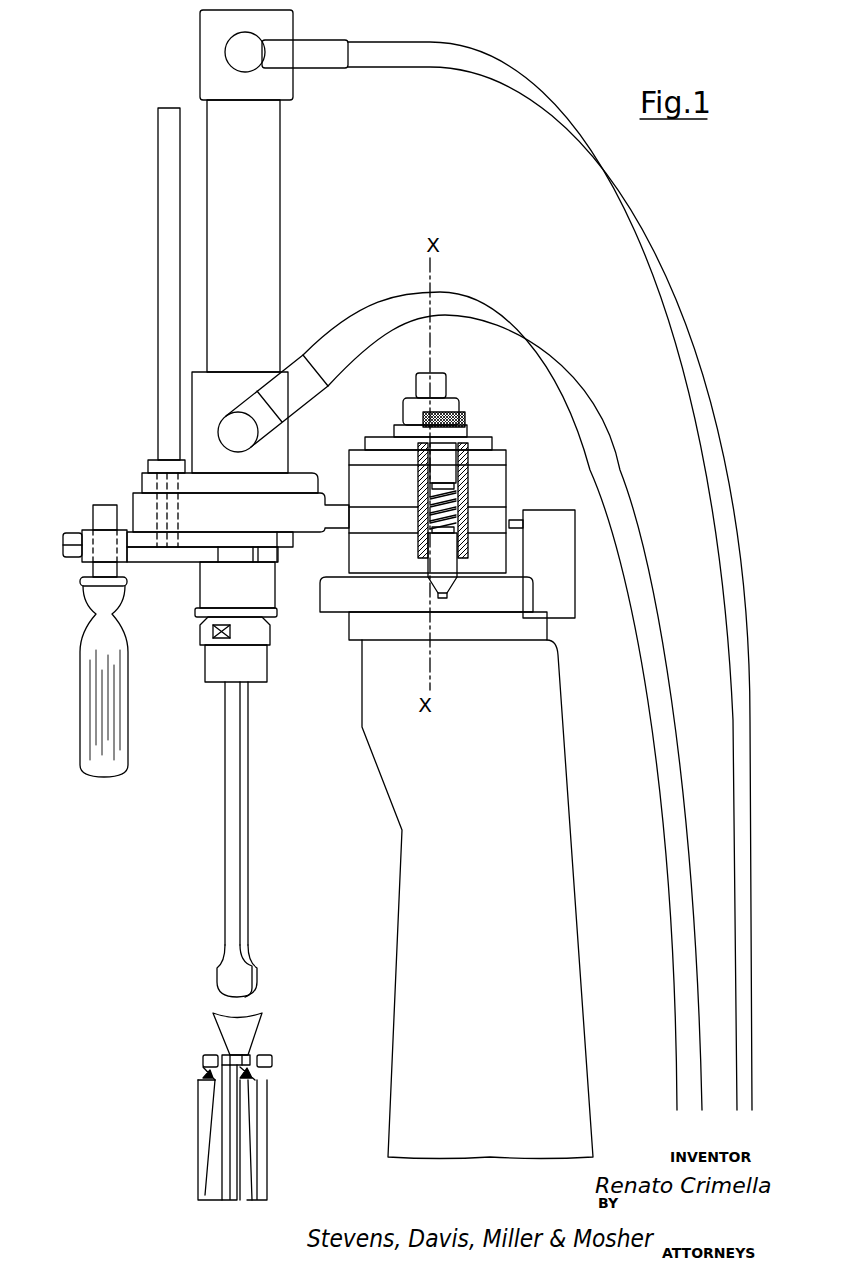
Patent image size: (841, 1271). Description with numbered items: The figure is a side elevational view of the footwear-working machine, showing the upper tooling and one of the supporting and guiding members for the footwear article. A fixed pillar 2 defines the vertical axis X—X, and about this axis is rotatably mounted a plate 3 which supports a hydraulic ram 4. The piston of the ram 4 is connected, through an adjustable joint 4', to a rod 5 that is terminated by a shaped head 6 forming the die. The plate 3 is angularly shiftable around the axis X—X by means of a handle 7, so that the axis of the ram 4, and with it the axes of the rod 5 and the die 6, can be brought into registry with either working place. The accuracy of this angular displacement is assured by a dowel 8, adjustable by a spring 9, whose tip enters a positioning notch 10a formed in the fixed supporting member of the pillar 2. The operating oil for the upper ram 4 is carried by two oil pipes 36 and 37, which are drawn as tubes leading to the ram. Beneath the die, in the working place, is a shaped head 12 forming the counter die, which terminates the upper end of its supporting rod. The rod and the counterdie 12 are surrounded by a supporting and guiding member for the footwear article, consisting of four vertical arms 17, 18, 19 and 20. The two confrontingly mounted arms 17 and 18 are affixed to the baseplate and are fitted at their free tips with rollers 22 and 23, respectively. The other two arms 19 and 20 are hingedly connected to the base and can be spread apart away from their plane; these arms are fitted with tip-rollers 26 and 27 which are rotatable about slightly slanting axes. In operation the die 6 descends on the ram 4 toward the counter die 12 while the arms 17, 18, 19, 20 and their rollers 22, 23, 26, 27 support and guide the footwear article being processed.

The fixed pillar 2 is at (560, 853).
The plate 3 is at (303, 525).
The hydraulic ram 4 is at (264, 236).
The adjustable joint 4' is at (248, 622).
The rod 5 is at (237, 842).
The shaped head 6 is at (243, 978).
The handle 7 is at (110, 712).
The dowel 8 is at (440, 565).
The spring 9 is at (465, 490).
The positioning notch 10a is at (447, 590).
The shaped head 12 is at (250, 1025).
The vertical arm 17 is at (215, 1102).
The vertical arm 18 is at (262, 1148).
The vertical arm 19 is at (238, 1125).
The vertical arm 20 is at (200, 1118).
The roller 22 is at (207, 1057).
The roller 23 is at (272, 1060).
The tip-roller 26 is at (242, 1073).
The tip-roller 27 is at (203, 1067).
The oil pipe 36 is at (647, 227).
The oil pipe 37 is at (472, 302).